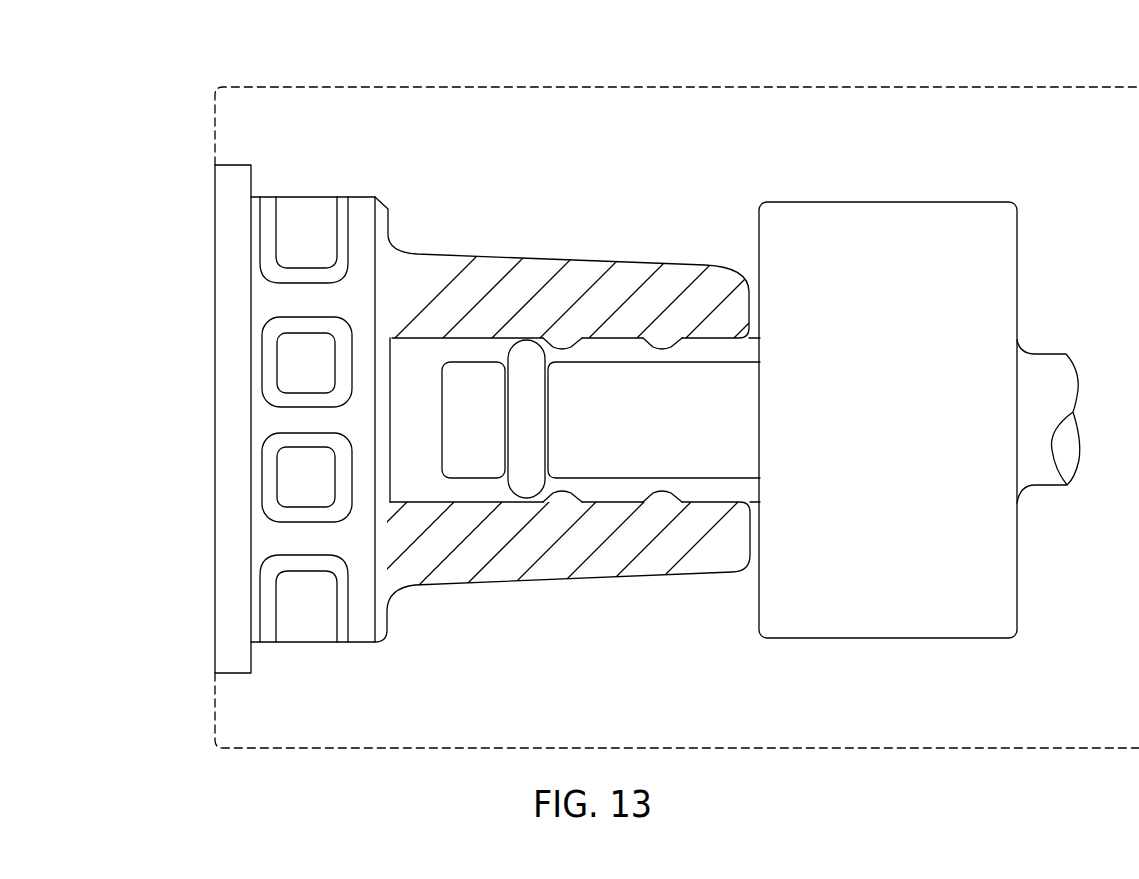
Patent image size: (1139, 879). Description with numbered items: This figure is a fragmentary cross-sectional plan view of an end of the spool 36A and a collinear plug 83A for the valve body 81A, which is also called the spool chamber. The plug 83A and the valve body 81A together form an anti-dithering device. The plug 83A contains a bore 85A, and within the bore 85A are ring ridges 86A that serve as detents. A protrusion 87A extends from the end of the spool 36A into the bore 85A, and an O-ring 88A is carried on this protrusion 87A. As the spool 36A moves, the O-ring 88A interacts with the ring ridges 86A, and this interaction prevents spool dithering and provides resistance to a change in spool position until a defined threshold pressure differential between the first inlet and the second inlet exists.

The valve body 81A is at (851, 87).
The plug 83A is at (213, 233).
The bore 85A is at (413, 388).
The protrusion 87A is at (460, 430).
The O-ring 88A is at (528, 353).
The ring ridges 86A is at (663, 340).
The spool 36A is at (886, 208).